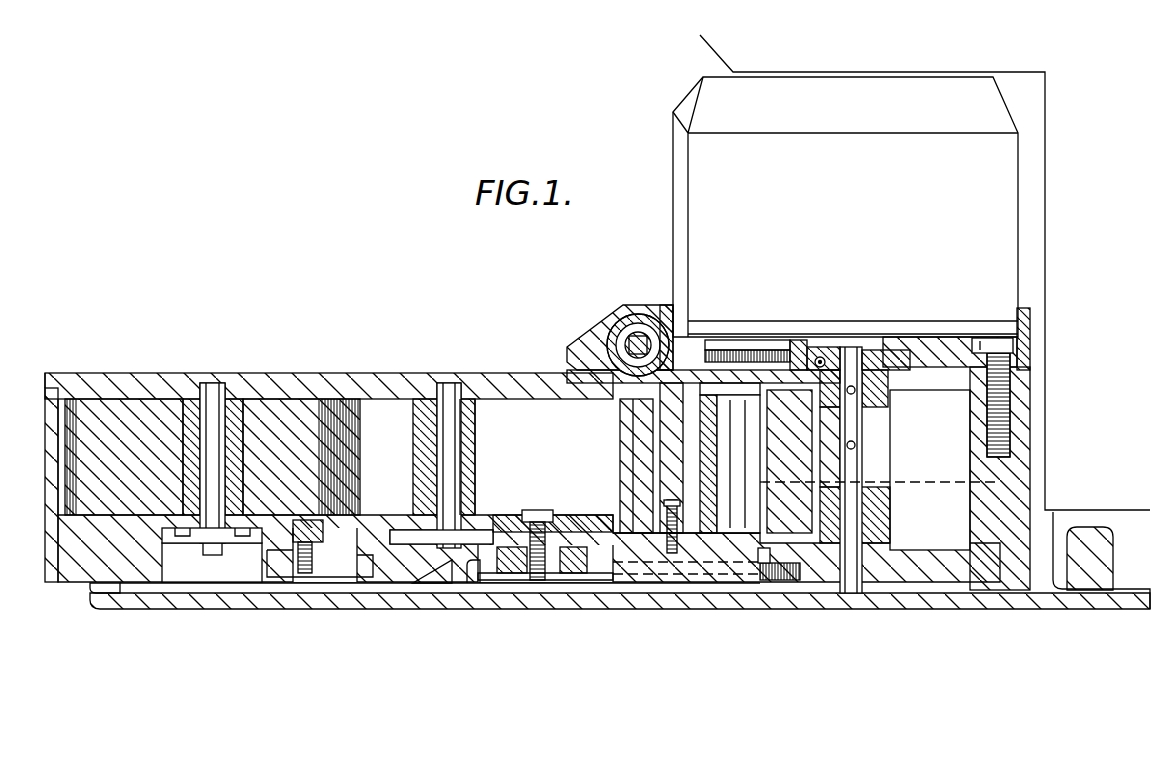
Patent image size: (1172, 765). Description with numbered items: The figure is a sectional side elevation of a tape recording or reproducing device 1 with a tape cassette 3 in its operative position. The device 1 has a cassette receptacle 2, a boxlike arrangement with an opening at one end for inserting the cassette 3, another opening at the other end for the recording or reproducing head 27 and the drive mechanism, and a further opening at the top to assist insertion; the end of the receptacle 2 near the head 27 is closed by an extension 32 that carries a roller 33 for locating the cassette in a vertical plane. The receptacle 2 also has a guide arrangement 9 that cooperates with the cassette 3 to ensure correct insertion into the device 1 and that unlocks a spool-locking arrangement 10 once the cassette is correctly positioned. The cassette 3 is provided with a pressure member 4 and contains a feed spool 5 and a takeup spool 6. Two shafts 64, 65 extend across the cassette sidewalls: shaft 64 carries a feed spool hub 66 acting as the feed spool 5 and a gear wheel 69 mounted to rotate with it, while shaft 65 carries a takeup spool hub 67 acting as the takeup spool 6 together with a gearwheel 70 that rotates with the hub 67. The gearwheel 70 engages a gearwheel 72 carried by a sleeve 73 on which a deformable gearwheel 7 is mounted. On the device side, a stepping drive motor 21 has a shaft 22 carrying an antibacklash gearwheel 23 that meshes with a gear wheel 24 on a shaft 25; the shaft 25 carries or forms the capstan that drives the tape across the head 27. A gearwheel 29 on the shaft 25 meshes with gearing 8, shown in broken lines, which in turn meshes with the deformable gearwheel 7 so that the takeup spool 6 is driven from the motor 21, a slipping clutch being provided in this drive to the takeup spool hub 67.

The tape recording or reproducing device 1 is at (654, 276).
The cassette receptacle 2 is at (392, 364).
The tape cassette 3 is at (310, 384).
The pressure member 4 is at (710, 507).
The feed spool 5 is at (238, 505).
The takeup spool 6 is at (470, 432).
The deformable gearwheel 7 is at (553, 570).
The gearing 8 is at (663, 567).
The guide arrangement 9 is at (458, 592).
The spool-locking arrangement 10 is at (313, 557).
The stepping drive motor 21 is at (872, 255).
The shaft 22 is at (881, 343).
The antibacklash gearwheel 23 is at (813, 341).
The gear wheel 24 is at (749, 360).
The shaft 25 is at (778, 349).
The recording or reproducing head 27 is at (803, 448).
The gearwheel 29 is at (775, 592).
The extension 32 is at (586, 334).
The roller 33 is at (634, 322).
The shaft 64 is at (206, 383).
The shaft 65 is at (439, 384).
The feed spool hub 66 is at (233, 405).
The takeup spool hub 67 is at (471, 408).
The gear wheel 69 is at (187, 544).
The gearwheel 70 is at (475, 530).
The gearwheel 72 is at (563, 530).
The sleeve 73 is at (532, 517).